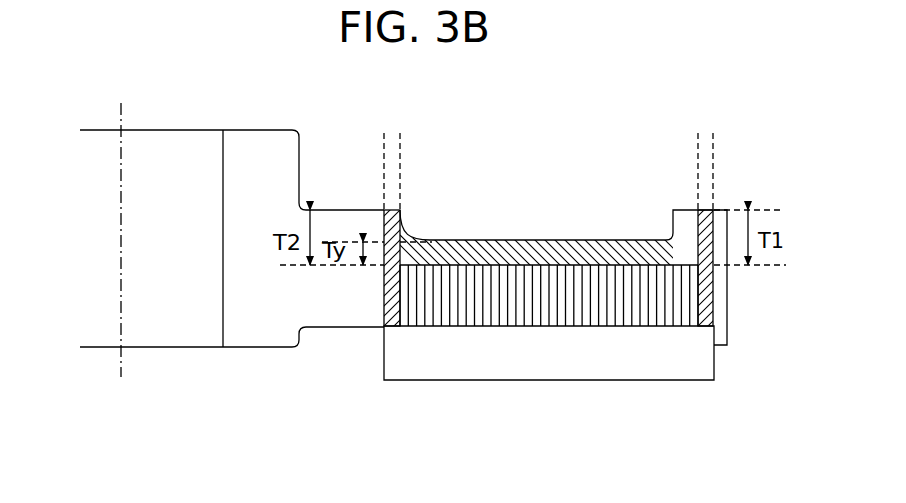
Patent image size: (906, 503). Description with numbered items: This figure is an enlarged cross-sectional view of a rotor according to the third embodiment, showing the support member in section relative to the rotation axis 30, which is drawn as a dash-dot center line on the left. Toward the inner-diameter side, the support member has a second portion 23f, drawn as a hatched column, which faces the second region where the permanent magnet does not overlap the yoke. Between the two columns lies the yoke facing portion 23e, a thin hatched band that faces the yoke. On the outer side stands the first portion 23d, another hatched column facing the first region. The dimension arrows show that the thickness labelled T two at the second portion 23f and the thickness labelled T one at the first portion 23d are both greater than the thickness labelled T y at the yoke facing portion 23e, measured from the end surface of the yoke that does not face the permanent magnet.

The rotation axis 30 is at (117, 363).
The second portion 23f is at (387, 220).
The yoke facing portion 23e is at (575, 248).
The first portion 23d is at (702, 223).